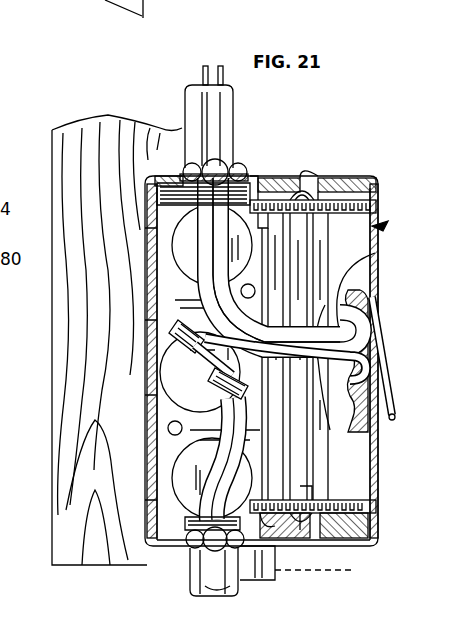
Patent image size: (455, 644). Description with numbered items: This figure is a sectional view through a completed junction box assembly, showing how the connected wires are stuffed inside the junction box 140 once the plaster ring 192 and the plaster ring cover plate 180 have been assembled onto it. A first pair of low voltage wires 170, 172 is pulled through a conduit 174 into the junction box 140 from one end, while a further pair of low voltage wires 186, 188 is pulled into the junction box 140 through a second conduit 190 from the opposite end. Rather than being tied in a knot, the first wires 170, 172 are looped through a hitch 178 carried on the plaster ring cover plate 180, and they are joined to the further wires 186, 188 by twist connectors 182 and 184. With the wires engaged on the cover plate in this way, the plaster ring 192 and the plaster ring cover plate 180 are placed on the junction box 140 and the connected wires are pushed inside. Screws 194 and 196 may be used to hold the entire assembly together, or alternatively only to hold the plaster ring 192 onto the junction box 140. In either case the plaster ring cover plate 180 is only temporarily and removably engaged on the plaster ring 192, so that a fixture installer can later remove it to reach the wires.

The junction box 140 is at (146, 547).
The low voltage wire 170 is at (232, 72).
The low voltage wire 172 is at (200, 80).
The conduit 174 is at (200, 112).
The hitch 178 is at (352, 262).
The plaster ring cover plate 180 is at (382, 226).
The twist connector 182 is at (146, 322).
The twist connector 184 is at (180, 388).
The low voltage wire 186 is at (300, 445).
The low voltage wire 188 is at (180, 438).
The conduit 190 is at (200, 582).
The plaster ring 192 is at (286, 180).
The screw 194 is at (354, 185).
The screw 196 is at (368, 530).